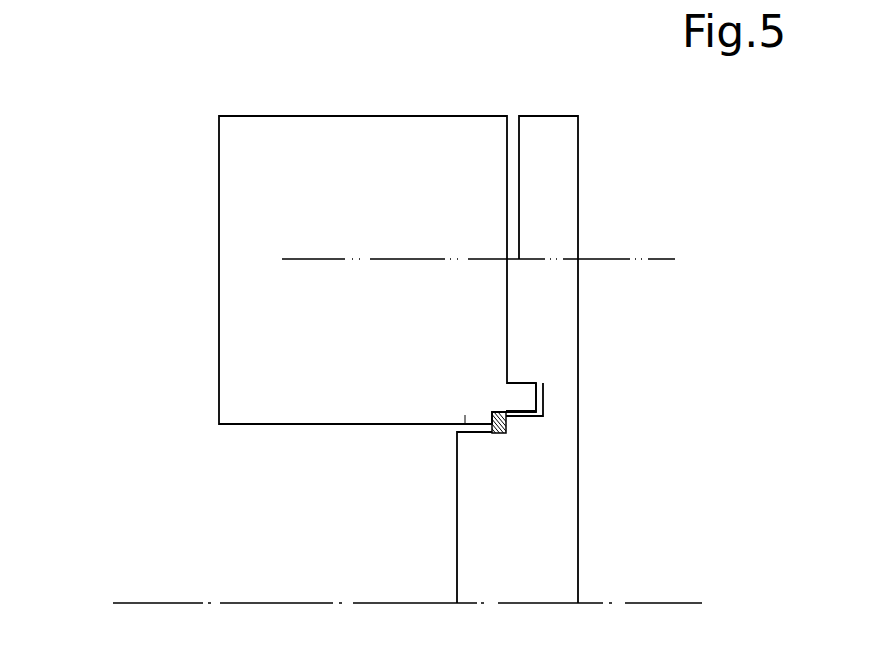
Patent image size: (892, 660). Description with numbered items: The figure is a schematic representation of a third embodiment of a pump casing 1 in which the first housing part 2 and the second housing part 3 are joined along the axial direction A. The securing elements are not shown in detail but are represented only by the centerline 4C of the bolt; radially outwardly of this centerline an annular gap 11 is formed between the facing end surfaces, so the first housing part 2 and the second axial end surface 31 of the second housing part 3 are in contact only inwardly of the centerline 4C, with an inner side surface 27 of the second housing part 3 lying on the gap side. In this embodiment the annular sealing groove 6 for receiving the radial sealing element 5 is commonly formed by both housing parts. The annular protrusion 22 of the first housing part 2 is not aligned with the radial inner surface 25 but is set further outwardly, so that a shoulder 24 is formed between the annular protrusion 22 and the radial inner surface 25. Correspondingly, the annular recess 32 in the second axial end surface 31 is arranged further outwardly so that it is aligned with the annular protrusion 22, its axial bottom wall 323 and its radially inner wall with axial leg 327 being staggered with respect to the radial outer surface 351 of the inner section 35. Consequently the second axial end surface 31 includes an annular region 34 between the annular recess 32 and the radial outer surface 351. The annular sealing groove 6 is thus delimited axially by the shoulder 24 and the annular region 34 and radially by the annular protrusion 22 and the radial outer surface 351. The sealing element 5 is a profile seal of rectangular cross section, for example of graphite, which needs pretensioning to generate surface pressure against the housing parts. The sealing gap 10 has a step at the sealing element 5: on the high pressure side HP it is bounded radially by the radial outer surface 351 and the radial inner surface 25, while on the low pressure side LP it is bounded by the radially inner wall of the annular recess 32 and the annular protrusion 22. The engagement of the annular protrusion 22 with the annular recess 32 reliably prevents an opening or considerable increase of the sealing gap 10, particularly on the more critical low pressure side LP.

The pump casing 1 is at (578, 97).
The first housing part 2 is at (327, 140).
The second housing part 3 is at (565, 142).
The annular gap 11 is at (510, 125).
The inner side surface 27 is at (538, 175).
The second axial end surface 31 is at (519, 193).
The centerline 4C is at (655, 257).
The low pressure side LP is at (647, 314).
The high pressure side HP is at (197, 527).
The annular protrusion 22 is at (522, 381).
The axial bottom wall 323 is at (545, 390).
The annular recess 32 is at (545, 398).
The axial leg 327 is at (508, 418).
The annular region 34 is at (510, 420).
The sealing element 5 is at (513, 423).
The annular sealing groove 6 is at (502, 432).
The sealing gap 10 is at (483, 432).
The shoulder 24 is at (492, 415).
The radial outer surface 351 is at (462, 423).
The inner section 35 is at (472, 575).
The radial inner surface 25 is at (282, 440).
The axial direction A is at (155, 608).